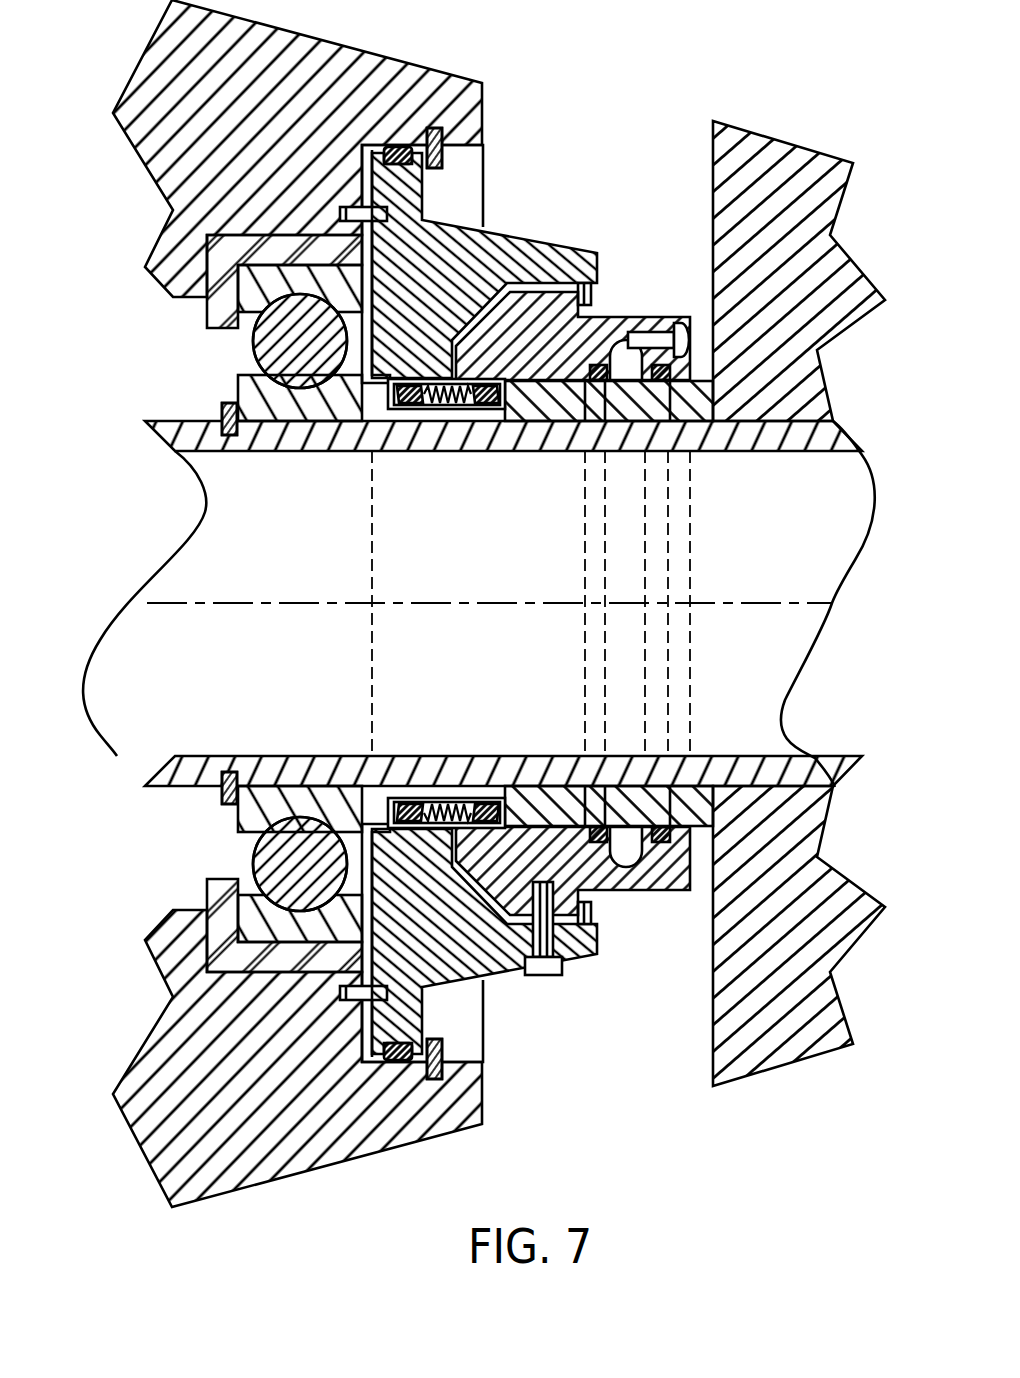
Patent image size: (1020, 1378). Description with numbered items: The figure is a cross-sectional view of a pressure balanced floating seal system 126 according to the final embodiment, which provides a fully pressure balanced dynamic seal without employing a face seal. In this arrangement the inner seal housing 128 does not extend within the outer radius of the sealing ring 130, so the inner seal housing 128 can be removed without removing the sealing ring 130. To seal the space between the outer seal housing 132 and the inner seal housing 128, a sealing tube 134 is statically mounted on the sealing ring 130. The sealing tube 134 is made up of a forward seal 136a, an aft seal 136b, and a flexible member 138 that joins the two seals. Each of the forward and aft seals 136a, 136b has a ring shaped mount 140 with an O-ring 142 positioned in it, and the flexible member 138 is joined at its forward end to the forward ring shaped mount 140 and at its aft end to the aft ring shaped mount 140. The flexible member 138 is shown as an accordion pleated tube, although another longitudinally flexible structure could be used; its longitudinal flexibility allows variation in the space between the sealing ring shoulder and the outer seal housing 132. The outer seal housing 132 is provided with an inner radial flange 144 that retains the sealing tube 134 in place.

The floating seal system 126 is at (583, 138).
The inner seal housing 128 is at (598, 336).
The sealing ring 130 is at (690, 425).
The outer seal housing 132 is at (451, 265).
The sealing tube 134 is at (482, 802).
The forward seal 136a is at (411, 404).
The aft seal 136b is at (489, 405).
The flexible member 138 is at (448, 405).
The ring shaped mount 140 is at (395, 392).
The O-ring 142 is at (360, 404).
The inner radial flange 144 is at (378, 383).